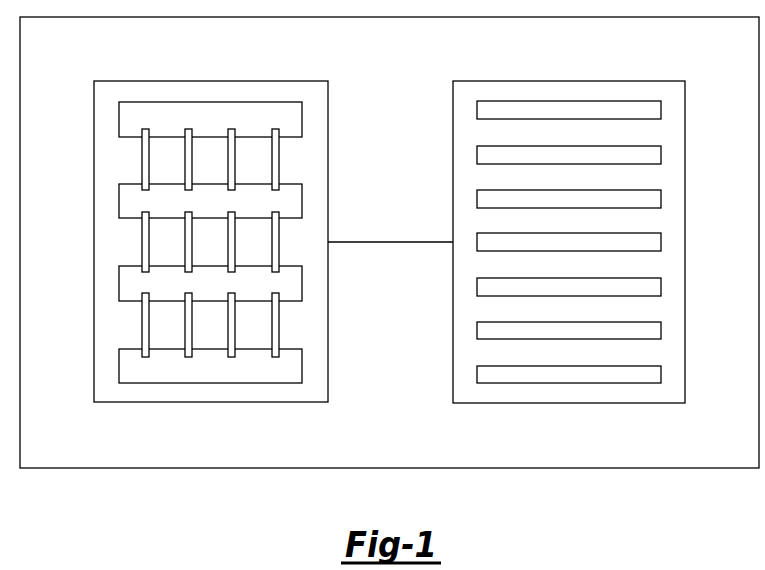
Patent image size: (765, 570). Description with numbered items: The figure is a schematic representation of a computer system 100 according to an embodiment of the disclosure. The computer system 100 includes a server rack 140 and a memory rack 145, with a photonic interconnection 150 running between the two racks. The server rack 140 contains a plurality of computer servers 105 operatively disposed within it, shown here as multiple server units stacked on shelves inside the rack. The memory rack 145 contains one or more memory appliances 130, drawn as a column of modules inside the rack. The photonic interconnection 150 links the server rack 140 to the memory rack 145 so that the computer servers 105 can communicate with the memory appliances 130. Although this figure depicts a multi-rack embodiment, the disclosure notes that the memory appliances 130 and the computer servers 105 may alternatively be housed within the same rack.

The computer system 100 is at (233, 470).
The computer servers 105 is at (279, 160).
The memory appliance 130 is at (668, 109).
The server rack 140 is at (212, 236).
The memory rack 145 is at (601, 237).
The photonic interconnection 150 is at (388, 246).